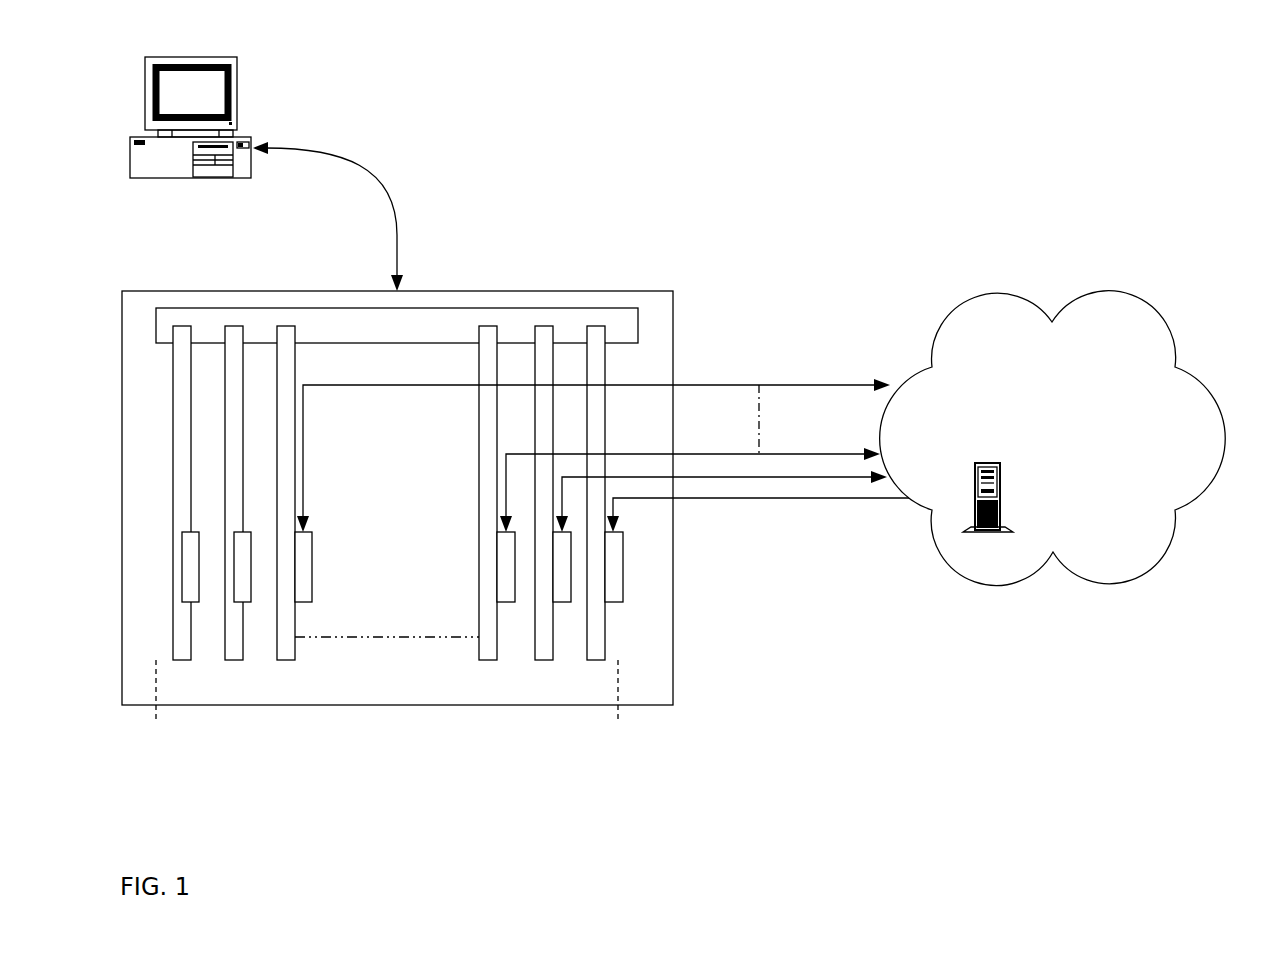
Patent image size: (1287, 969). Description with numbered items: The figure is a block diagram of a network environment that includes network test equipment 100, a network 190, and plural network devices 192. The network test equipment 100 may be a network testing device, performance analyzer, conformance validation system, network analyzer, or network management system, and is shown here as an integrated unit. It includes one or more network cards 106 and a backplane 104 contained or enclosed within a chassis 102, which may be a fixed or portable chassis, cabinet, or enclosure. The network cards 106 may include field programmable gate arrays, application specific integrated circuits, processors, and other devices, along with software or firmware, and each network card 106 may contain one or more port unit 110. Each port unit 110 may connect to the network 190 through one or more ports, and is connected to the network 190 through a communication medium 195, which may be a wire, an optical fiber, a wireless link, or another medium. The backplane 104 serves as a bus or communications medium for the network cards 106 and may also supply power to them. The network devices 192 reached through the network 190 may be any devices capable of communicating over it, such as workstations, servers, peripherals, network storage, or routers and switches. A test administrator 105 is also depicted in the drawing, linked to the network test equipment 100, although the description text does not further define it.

The network test equipment 100 is at (609, 77).
The chassis 102 is at (518, 291).
The backplane 104 is at (587, 308).
The test administrator 105 is at (251, 174).
The network cards 106 is at (618, 720).
The port unit 110 is at (620, 603).
The network 190 is at (1053, 466).
The network devices 192 is at (1002, 497).
The communication medium 195 is at (742, 498).